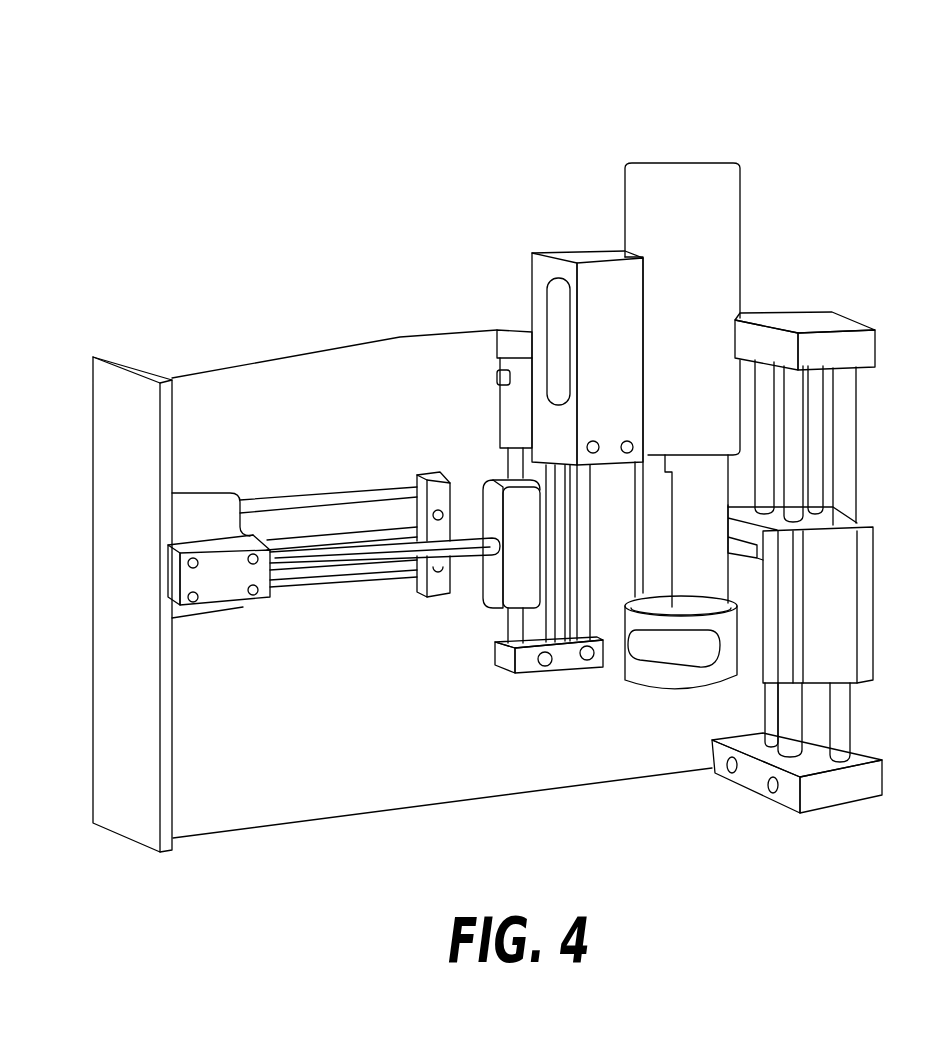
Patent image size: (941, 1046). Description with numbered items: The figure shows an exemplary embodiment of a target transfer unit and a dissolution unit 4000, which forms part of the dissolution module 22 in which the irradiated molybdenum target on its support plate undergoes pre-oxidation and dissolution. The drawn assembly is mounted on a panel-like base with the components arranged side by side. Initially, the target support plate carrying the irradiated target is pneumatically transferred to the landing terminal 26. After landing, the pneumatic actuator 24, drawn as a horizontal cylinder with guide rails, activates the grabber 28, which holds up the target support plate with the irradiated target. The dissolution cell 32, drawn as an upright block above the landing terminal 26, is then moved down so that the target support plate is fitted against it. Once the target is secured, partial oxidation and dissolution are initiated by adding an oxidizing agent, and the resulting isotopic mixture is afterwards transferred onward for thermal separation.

The target transfer unit and dissolution unit 4000 is at (171, 112).
The dissolution module 22 is at (793, 243).
The pneumatic actuator 24 is at (228, 575).
The landing terminal 26 is at (697, 547).
The grabber 28 is at (510, 522).
The dissolution cell 32 is at (557, 340).